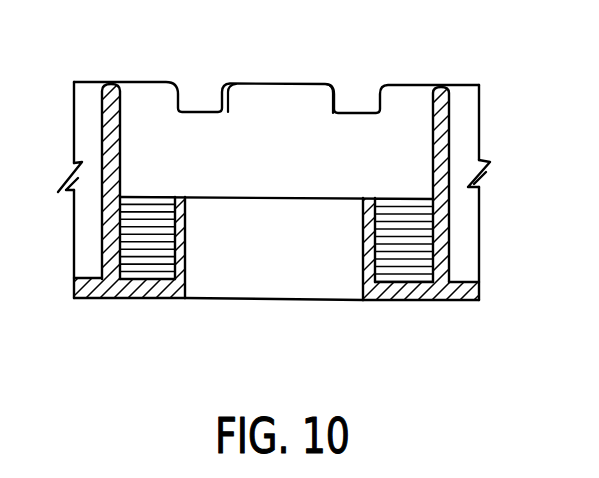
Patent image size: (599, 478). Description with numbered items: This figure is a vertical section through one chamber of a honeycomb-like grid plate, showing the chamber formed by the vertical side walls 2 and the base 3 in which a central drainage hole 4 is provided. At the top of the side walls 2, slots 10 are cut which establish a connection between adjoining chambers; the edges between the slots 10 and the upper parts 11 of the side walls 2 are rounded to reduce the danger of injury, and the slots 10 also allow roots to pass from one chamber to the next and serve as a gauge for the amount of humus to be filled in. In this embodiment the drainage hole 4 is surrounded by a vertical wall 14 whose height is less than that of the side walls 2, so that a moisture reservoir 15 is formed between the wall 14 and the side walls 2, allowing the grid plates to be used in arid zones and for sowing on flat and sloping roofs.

The side walls 2 is at (148, 100).
The base 3 is at (398, 298).
The drainage hole 4 is at (328, 268).
The slots 10 is at (198, 90).
The upper parts 11 is at (296, 82).
The vertical wall 14 is at (185, 252).
The moisture reservoir 15 is at (148, 263).